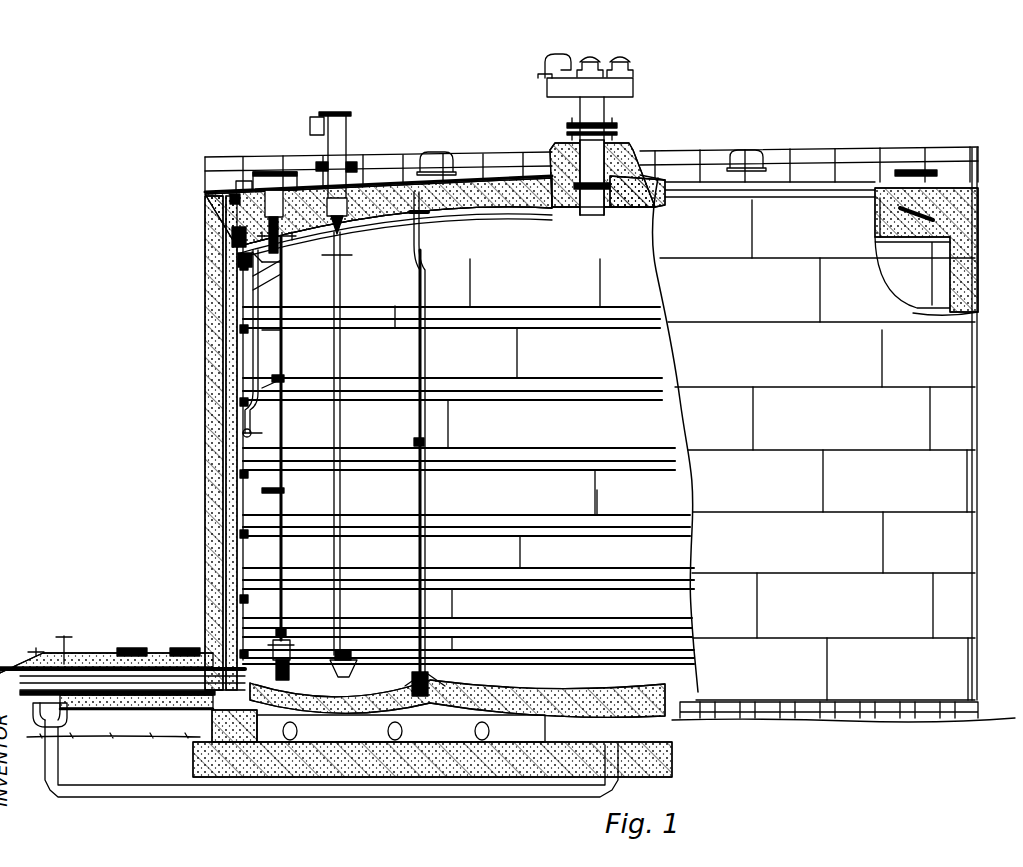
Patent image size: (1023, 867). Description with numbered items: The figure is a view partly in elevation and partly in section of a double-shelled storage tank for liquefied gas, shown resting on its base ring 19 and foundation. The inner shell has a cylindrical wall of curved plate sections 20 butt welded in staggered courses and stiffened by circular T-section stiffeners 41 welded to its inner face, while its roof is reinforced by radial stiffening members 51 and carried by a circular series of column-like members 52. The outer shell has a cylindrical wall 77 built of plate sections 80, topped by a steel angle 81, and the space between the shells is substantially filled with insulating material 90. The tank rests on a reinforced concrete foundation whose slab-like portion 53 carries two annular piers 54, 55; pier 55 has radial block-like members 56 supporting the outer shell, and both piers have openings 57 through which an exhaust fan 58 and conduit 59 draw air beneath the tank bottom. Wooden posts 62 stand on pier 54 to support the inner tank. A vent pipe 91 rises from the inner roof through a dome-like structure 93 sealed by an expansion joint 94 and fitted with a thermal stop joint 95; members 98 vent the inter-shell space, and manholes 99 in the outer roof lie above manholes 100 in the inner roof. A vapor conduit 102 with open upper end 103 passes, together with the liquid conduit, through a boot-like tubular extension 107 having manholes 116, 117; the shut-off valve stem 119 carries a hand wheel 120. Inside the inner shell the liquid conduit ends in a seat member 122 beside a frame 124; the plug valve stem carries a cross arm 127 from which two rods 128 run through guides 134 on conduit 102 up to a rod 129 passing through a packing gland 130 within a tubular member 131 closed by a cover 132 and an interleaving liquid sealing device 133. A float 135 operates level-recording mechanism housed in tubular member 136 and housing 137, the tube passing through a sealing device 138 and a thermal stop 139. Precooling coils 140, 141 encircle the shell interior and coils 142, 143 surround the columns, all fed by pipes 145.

The base ring 19 is at (848, 704).
The plate sections 20 is at (940, 272).
The stiffeners 41 is at (470, 318).
The stiffening members 51 is at (527, 213).
The column-like members 52 is at (427, 554).
The slab-like portion 53 is at (195, 765).
The pier 54 is at (510, 731).
The pier 55 is at (315, 732).
The block-like members 56 is at (212, 713).
The openings 57 is at (291, 741).
The exhaust fan 58 is at (67, 713).
The conduit 59 is at (162, 790).
The posts 62 is at (445, 690).
The cylindrical wall 77 is at (208, 388).
The plate sections 80 is at (897, 463).
The steel angle 81 is at (790, 194).
The insulating material 90 is at (212, 452).
The pipe 91 is at (592, 112).
The dome-like structure 93 is at (565, 146).
The expansion joint 94 is at (617, 134).
The thermal stop joint 95 is at (591, 183).
The members 98 is at (437, 153).
The manholes 99 is at (915, 180).
The manholes 100 is at (925, 215).
The vapor conduit 102 is at (257, 433).
The open upper end 103 is at (258, 252).
The tubular extension 107 is at (162, 702).
The manhole 116 is at (137, 634).
The manhole 117 is at (173, 647).
The valve stem 119 is at (57, 642).
The hand wheel 120 is at (67, 640).
The seat member 122 is at (290, 673).
The frame 124 is at (291, 651).
The cross arm 127 is at (284, 632).
The rods 128 is at (284, 554).
The rod 129 is at (244, 188).
The packing gland 130 is at (285, 236).
The tubular member 131 is at (232, 206).
The cover 132 is at (273, 192).
The interleaving liquid sealing device 133 is at (258, 175).
The guides 134 is at (262, 391).
The float 135 is at (357, 660).
The tubular member 136 is at (346, 152).
The housing 137 is at (316, 127).
The interleaving liquid sealing device 138 is at (318, 164).
The thermal stop 139 is at (363, 180).
The coil 140 is at (265, 278).
The coil 141 is at (247, 440).
The coil 142 is at (413, 250).
The coil 143 is at (414, 442).
The pipes 145 is at (215, 306).